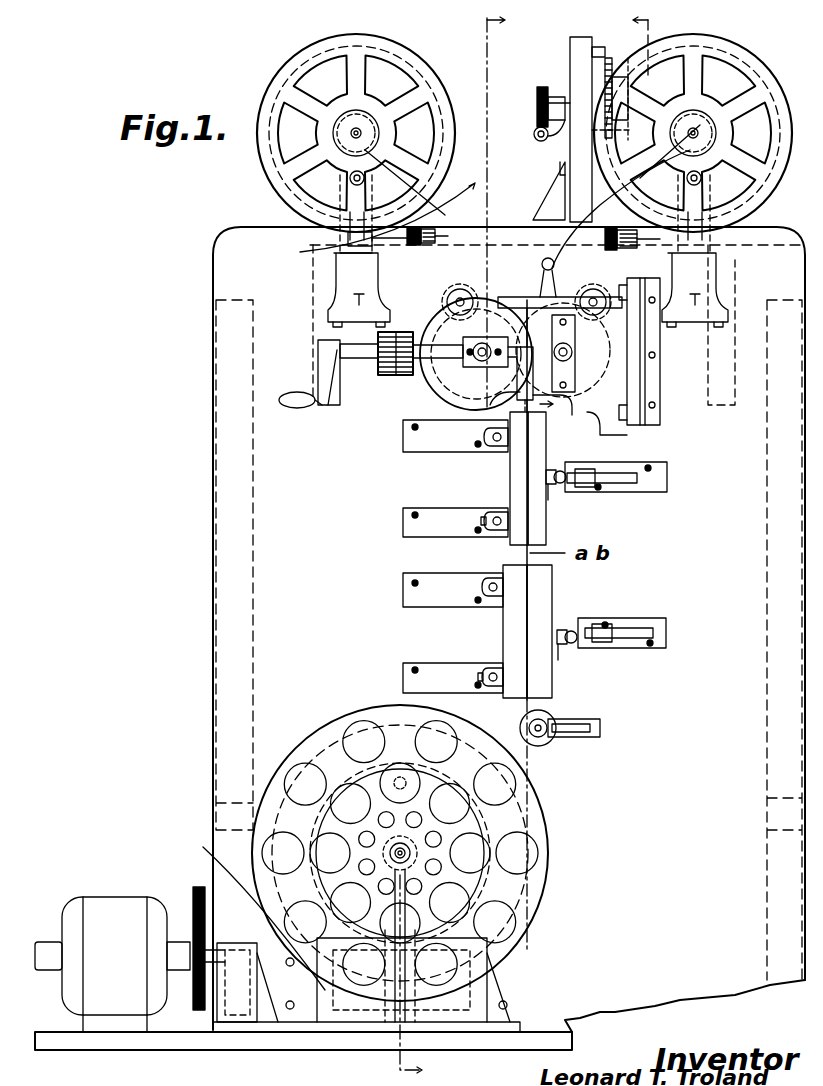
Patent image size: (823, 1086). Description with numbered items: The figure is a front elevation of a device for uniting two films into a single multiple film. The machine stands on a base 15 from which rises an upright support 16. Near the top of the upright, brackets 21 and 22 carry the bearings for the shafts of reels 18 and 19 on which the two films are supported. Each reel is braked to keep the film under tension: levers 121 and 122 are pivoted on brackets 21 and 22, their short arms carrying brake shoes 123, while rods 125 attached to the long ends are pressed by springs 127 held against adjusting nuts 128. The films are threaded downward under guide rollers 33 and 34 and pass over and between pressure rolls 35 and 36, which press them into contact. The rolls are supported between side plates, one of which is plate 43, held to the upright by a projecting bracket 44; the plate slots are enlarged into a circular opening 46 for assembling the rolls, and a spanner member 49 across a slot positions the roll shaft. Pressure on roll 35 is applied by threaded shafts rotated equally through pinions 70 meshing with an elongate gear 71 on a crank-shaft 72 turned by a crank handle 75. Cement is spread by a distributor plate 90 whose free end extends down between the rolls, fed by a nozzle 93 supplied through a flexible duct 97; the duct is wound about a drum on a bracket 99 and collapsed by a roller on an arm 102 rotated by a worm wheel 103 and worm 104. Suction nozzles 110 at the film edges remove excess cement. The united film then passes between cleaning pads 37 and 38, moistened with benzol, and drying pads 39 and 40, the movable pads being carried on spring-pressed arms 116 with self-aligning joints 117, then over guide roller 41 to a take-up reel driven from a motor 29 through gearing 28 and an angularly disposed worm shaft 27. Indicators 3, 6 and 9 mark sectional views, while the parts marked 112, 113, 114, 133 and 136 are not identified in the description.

The section line 3- 3 is at (462, 545).
The bracket 6 is at (615, 194).
The section line / guide block 9 is at (582, 212).
The base 15 is at (545, 1040).
The upright support 16 is at (285, 622).
The reel 18 is at (335, 52).
The reel 19 is at (700, 48).
The bracket 21 is at (338, 247).
The bracket 22 is at (715, 250).
The angularly disposed shaft 27 is at (205, 848).
The gearing 28 is at (196, 888).
The motor 29 is at (98, 900).
The guide roller 33 is at (448, 298).
The guide roller 34 is at (600, 312).
The pressure roll 35 is at (448, 390).
The pressure roll 36 is at (606, 420).
The cleaning pad 37 is at (510, 470).
The cleaning pad 38 is at (538, 460).
The drying pad 39 is at (508, 627).
The drying pad 40 is at (540, 608).
The guide roller 41 is at (548, 745).
The plate 43 is at (590, 365).
The projecting bracket 44 is at (657, 385).
The circular opening 46 is at (425, 372).
The spanner member 49 is at (563, 392).
The pinion 70 is at (420, 358).
The elongate gear 71 is at (462, 340).
The crank-shaft 72 is at (348, 405).
The crank handle 75 is at (320, 408).
The distributor plate 90 is at (515, 298).
The nozzle 93 is at (542, 270).
The flexible duct 97 is at (572, 238).
The bracket 99 is at (578, 57).
The arm 102 is at (603, 47).
The worm wheel 103 is at (540, 96).
The worm 104 is at (534, 135).
The suction nozzle 110 is at (578, 352).
The pin 112 is at (482, 527).
The plate 113 is at (410, 597).
The slide plate 114 is at (665, 480).
The spring-pressed arm 116 is at (560, 484).
The joint 117 is at (548, 500).
The lever 121 is at (330, 205).
The lever 122 is at (700, 180).
The brake shoe 123 is at (705, 105).
The rod 125 is at (345, 262).
The spring 127 is at (405, 250).
The adjusting nut 128 is at (455, 246).
The film 133 is at (372, 150).
The film guide 136 is at (482, 217).